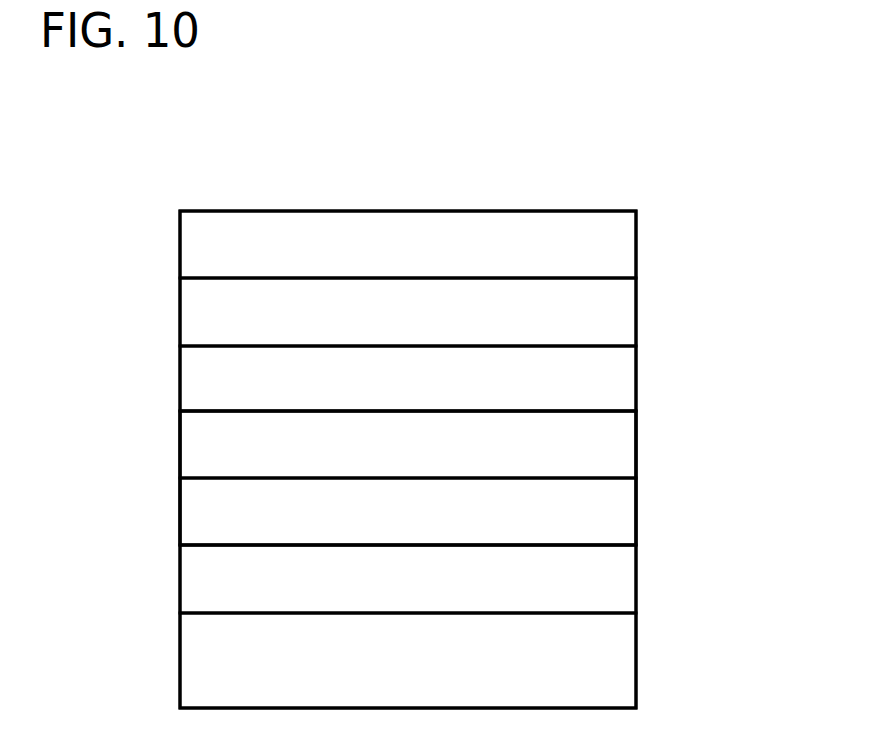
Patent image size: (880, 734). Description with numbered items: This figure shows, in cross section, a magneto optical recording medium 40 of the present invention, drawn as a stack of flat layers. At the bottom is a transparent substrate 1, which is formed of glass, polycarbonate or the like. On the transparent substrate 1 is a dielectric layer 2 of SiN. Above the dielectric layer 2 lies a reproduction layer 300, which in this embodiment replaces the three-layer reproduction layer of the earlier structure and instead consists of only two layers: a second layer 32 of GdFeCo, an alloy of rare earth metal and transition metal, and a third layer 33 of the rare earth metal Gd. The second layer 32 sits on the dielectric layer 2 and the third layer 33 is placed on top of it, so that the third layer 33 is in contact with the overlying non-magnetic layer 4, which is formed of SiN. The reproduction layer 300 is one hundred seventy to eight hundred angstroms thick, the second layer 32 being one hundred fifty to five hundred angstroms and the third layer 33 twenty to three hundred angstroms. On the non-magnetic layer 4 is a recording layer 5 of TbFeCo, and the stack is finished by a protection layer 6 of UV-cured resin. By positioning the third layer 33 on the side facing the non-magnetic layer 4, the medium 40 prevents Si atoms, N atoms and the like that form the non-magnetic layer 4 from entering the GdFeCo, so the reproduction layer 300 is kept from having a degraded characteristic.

The magneto optical recording medium 40 is at (690, 151).
The protection layer 6 is at (620, 250).
The recording layer 5 is at (620, 317).
The non-magnetic layer 4 is at (620, 383).
The reproduction layer 300 is at (742, 428).
The third layer 33 is at (620, 450).
The second layer 32 is at (620, 518).
The dielectric layer 2 is at (620, 585).
The transparent substrate 1 is at (620, 660).